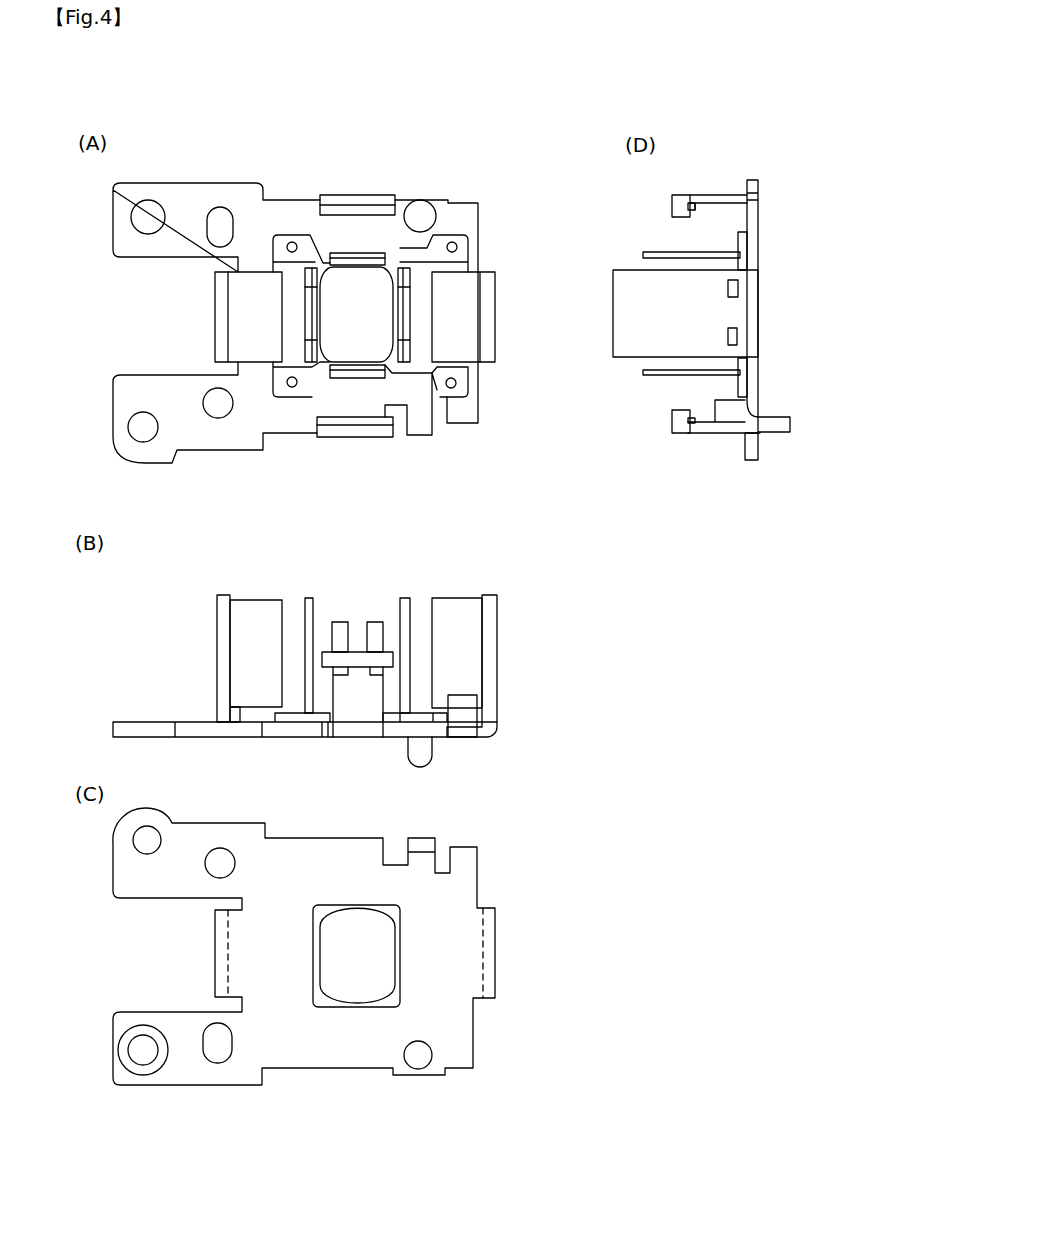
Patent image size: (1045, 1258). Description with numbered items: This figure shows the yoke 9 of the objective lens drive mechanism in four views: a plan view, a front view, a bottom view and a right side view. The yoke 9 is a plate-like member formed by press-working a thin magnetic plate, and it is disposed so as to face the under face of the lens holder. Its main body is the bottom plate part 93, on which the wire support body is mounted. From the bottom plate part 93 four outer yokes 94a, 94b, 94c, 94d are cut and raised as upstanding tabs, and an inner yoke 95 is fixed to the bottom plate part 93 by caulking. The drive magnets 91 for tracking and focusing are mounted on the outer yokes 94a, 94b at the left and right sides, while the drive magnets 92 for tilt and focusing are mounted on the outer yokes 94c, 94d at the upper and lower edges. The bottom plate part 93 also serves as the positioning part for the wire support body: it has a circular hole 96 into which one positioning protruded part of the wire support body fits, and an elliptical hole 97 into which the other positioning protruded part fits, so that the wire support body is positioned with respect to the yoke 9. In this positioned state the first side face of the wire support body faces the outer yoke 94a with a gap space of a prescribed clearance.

The yoke 9 is at (440, 178).
The drive magnets for tracking and focusing 91 is at (253, 297).
The drive magnets for tilt and focusing 92 is at (383, 212).
The bottom plate part 93 is at (245, 198).
The outer yoke 94a is at (215, 303).
The outer yoke 94b is at (490, 305).
The outer yoke 94c is at (362, 198).
The outer yoke 94d is at (345, 428).
The inner yoke 95 is at (420, 255).
The circular hole 96 is at (218, 413).
The elliptical hole 97 is at (215, 212).